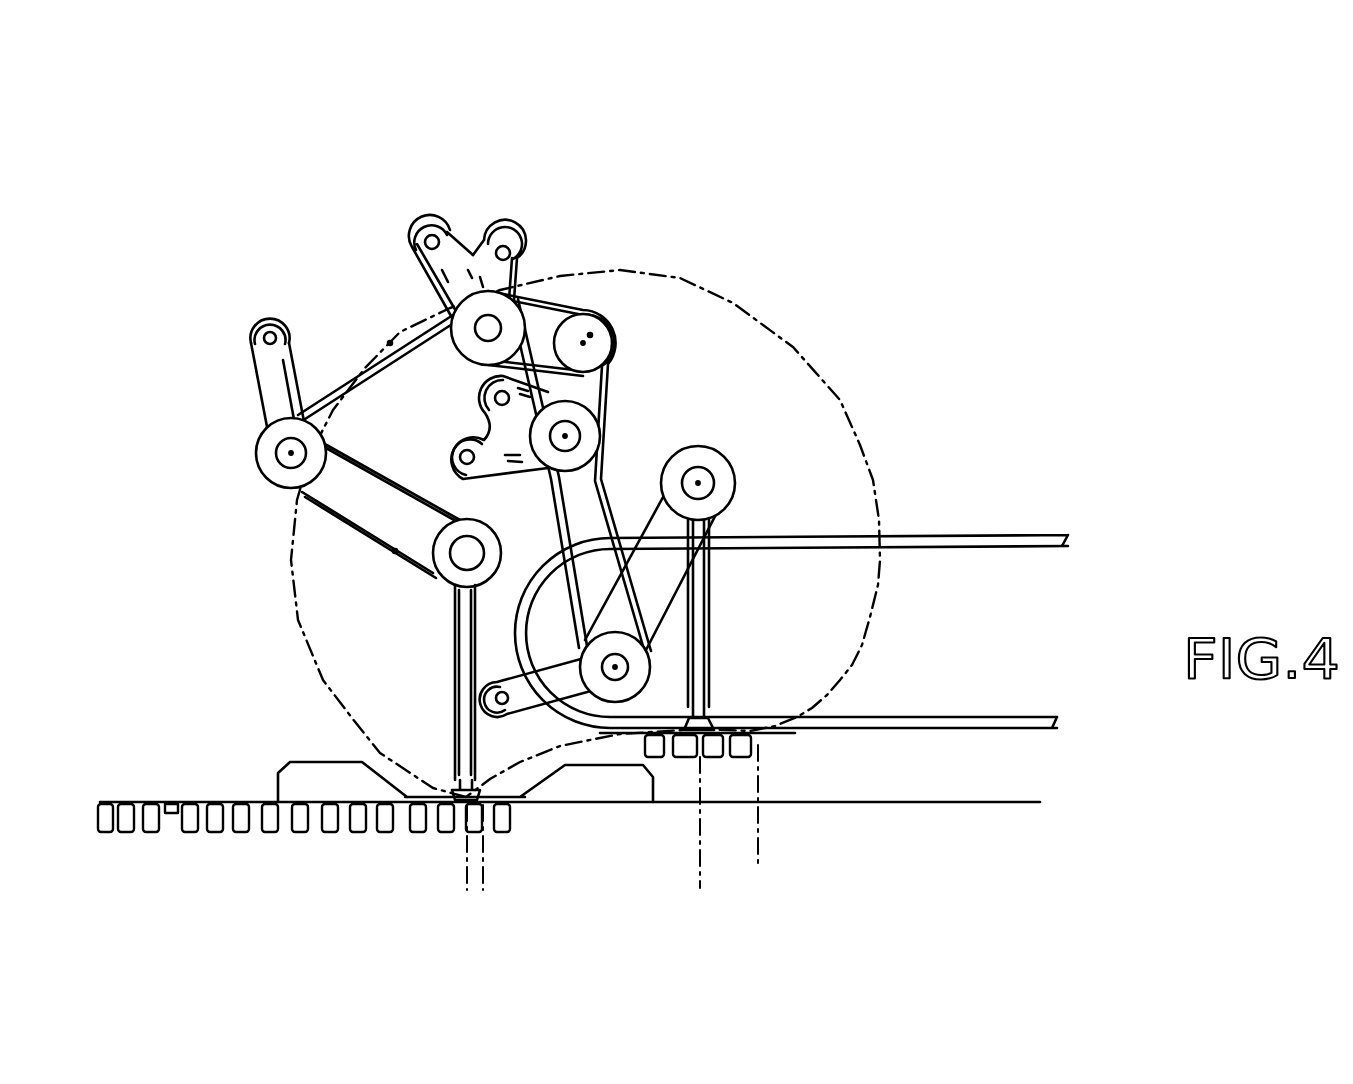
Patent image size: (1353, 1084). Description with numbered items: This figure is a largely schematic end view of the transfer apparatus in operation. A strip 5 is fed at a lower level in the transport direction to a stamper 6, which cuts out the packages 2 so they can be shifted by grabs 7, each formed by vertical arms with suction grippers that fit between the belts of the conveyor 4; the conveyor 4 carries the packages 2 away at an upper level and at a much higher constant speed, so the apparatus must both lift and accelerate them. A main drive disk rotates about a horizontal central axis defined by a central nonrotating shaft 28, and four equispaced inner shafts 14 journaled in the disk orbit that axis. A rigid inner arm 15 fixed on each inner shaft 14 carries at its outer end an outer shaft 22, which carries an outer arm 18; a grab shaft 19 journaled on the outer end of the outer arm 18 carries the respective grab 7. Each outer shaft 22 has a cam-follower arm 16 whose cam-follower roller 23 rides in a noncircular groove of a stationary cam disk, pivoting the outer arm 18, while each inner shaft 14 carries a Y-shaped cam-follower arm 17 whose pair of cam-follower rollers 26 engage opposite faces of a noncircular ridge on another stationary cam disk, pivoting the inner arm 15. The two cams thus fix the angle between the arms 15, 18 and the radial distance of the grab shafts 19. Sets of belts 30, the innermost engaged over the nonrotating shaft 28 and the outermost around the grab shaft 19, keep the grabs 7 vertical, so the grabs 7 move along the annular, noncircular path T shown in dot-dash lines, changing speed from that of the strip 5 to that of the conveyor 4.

The packages 2 is at (757, 742).
The conveyor 4 is at (1036, 536).
The strip 5 is at (115, 800).
The stamper 6 is at (300, 783).
The grabs 7 is at (455, 660).
The inner shafts 14 is at (498, 322).
The inner arm 15 is at (364, 372).
The cam-follower arm 16 is at (242, 324).
The Y-shaped cam-follower arm 17 is at (470, 258).
The outer arm 18 is at (372, 500).
The grab shaft 19 is at (453, 560).
The outer shaft 22 is at (280, 452).
The cam-follower roller 23 is at (270, 318).
The cam-follower rollers 26 is at (432, 226).
The central nonrotating shaft 28 is at (600, 325).
The belts 30 is at (590, 335).
The path T is at (797, 347).